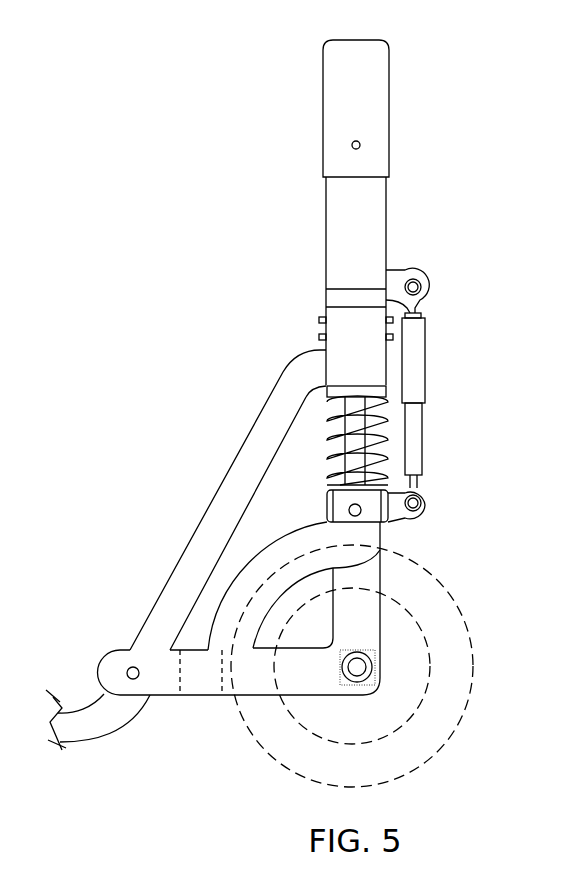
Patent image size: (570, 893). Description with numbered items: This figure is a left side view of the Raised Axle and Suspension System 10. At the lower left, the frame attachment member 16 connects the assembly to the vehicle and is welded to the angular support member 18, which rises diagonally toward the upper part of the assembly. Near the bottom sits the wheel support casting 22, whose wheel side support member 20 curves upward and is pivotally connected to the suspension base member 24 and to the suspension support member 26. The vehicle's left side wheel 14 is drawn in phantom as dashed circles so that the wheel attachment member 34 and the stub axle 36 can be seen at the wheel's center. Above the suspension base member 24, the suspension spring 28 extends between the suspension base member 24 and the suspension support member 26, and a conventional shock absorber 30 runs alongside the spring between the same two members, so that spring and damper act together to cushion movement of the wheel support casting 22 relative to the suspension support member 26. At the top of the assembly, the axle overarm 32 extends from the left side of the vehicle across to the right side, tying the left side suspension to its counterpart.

The Raised Axle and Suspension System 10 is at (226, 282).
The wheel 14 is at (417, 747).
The frame attachment member 16 is at (78, 735).
The angular support member 18 is at (255, 408).
The wheel side support member 20 is at (240, 653).
The wheel support casting 22 is at (191, 680).
The suspension base member 24 is at (393, 522).
The suspension support member 26 is at (342, 251).
The suspension spring 28 is at (396, 443).
The shock absorber 30 is at (413, 378).
The axle overarm 32 is at (348, 72).
The wheel attachment member 34 is at (363, 617).
The stub axle 36 is at (360, 672).